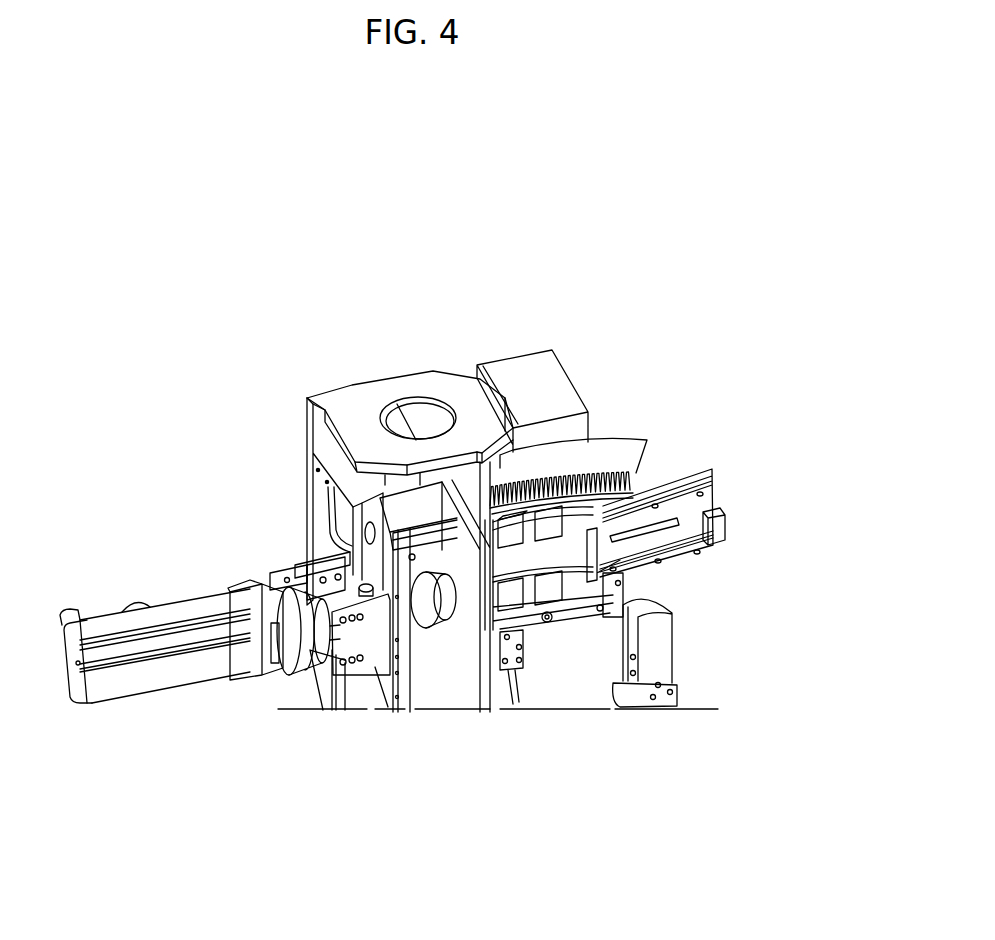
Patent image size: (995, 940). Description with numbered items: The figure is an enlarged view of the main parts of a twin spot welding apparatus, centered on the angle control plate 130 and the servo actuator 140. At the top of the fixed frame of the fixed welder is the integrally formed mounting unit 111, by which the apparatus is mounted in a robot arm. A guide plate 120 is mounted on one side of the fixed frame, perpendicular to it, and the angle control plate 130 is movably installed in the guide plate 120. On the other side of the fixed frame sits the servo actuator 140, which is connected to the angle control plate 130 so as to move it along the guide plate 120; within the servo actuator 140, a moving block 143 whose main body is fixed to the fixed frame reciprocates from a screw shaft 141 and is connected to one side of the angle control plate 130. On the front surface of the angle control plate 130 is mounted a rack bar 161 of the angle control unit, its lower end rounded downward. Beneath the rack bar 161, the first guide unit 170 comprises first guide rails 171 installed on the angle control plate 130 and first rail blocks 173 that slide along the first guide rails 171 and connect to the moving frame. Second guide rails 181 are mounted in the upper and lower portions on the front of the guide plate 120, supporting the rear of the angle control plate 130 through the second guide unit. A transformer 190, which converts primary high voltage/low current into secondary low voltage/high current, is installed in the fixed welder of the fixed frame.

The mounting unit 111 is at (400, 388).
The guide plate 120 is at (692, 478).
The angle control plate 130 is at (602, 458).
The servo actuator 140 is at (139, 680).
The screw shaft 141 is at (433, 600).
The moving block 143 is at (440, 612).
The rack bar 161 is at (608, 478).
The first guide unit 170 is at (581, 668).
The first guide rails 171 is at (597, 575).
The first rail blocks 173 is at (548, 597).
The second guide rails 181 is at (702, 543).
The transformers 190 is at (521, 362).